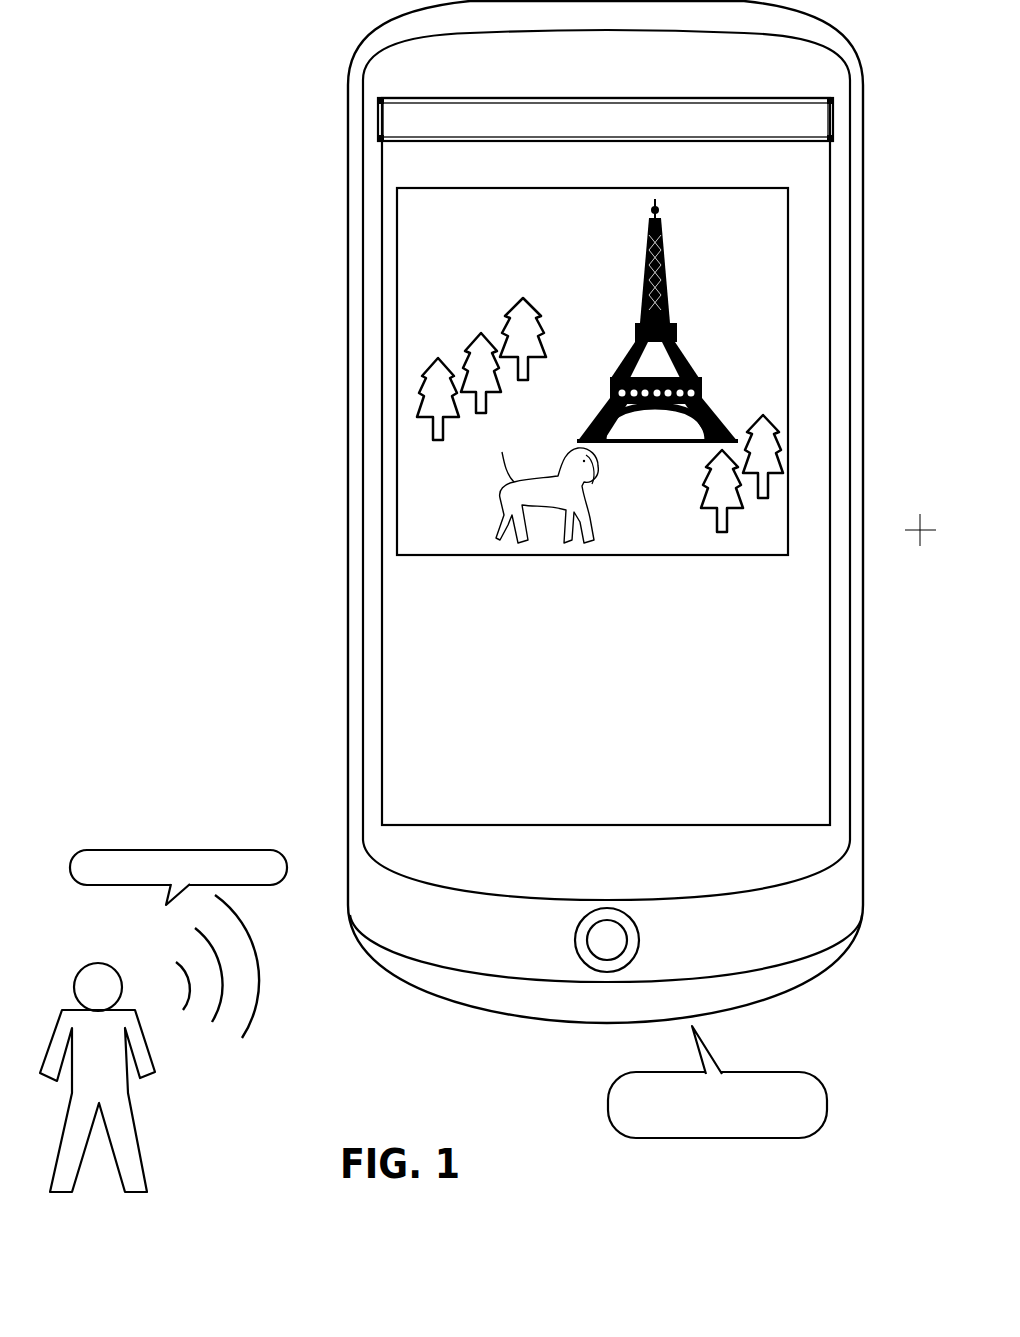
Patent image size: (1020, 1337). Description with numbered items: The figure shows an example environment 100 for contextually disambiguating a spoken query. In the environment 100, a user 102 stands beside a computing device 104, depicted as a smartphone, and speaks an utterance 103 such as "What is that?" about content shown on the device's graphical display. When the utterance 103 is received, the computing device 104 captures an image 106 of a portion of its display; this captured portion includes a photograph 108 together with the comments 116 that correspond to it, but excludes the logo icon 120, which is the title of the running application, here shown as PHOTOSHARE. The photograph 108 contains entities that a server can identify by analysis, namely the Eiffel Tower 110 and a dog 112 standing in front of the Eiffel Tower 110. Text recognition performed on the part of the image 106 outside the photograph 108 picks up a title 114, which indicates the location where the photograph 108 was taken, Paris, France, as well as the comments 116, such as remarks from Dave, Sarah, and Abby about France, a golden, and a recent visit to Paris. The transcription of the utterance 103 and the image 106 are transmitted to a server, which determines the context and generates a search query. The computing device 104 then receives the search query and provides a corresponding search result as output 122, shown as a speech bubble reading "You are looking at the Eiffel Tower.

The environment 100 is at (106, 115).
The user 102 is at (187, 1063).
The utterance 103 is at (84, 838).
The computing device 104 is at (335, 70).
The image 106 is at (248, 145).
The photograph 108 is at (327, 197).
The Eiffel Tower 110 is at (690, 241).
The dog 112 is at (486, 506).
The title 114 is at (489, 166).
The comments 116 is at (592, 677).
The logo icon 120 is at (605, 119).
The output 122 is at (599, 1106).